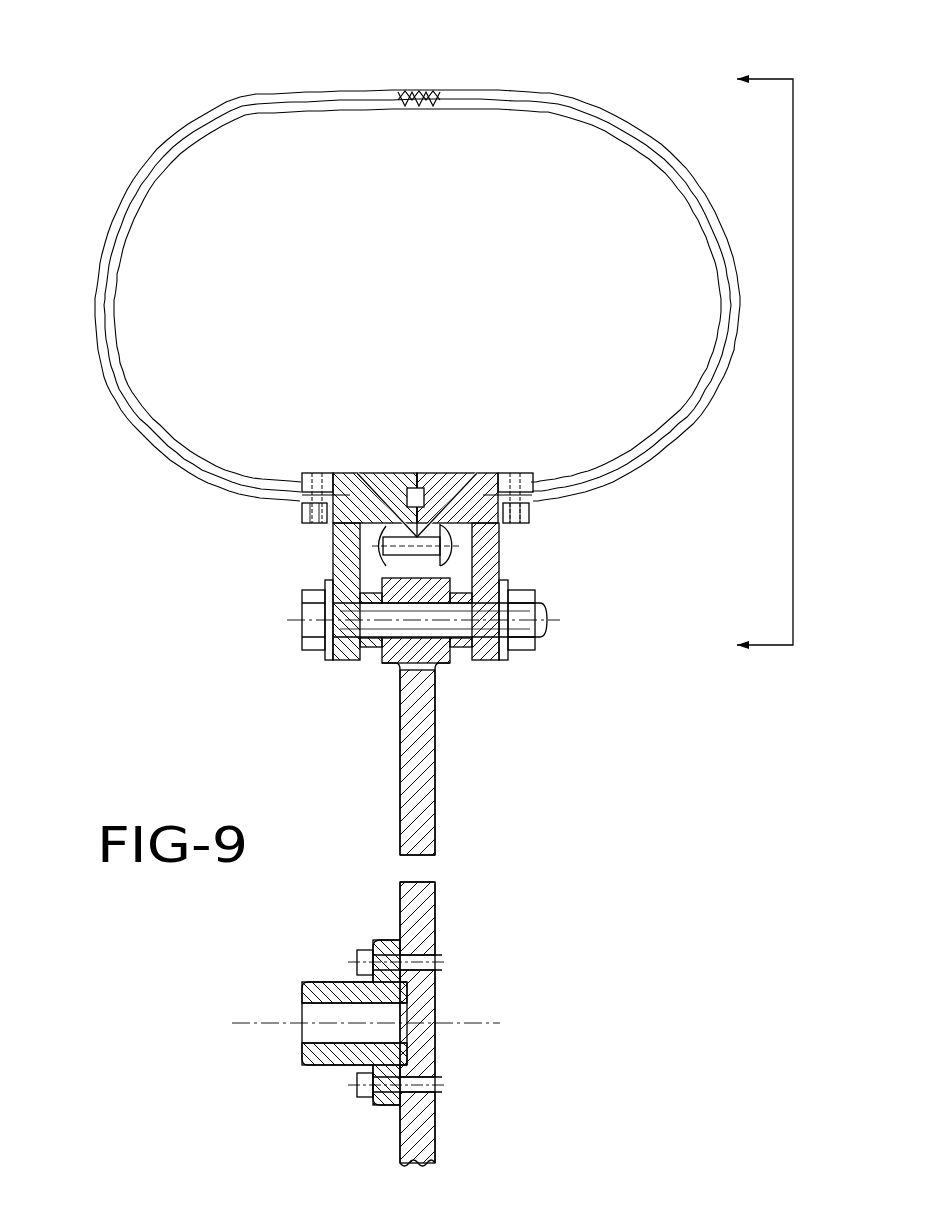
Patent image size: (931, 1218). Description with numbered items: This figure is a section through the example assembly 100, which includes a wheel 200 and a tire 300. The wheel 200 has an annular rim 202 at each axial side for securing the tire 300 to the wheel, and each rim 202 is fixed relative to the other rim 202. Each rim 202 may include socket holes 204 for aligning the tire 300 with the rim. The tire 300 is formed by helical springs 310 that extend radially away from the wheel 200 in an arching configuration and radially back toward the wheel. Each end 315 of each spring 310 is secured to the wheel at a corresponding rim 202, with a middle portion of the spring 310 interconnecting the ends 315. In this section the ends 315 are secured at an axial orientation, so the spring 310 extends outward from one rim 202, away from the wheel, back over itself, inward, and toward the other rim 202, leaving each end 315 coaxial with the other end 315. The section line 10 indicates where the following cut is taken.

The assembly 100 is at (85, 105).
The tire 300 is at (520, 90).
The helical spring 310 is at (418, 90).
The section line 10- 10 is at (743, 366).
The annular rim 202 is at (358, 478).
The socket hole 204 is at (333, 529).
The end 315 is at (341, 490).
The wheel 200 is at (436, 760).